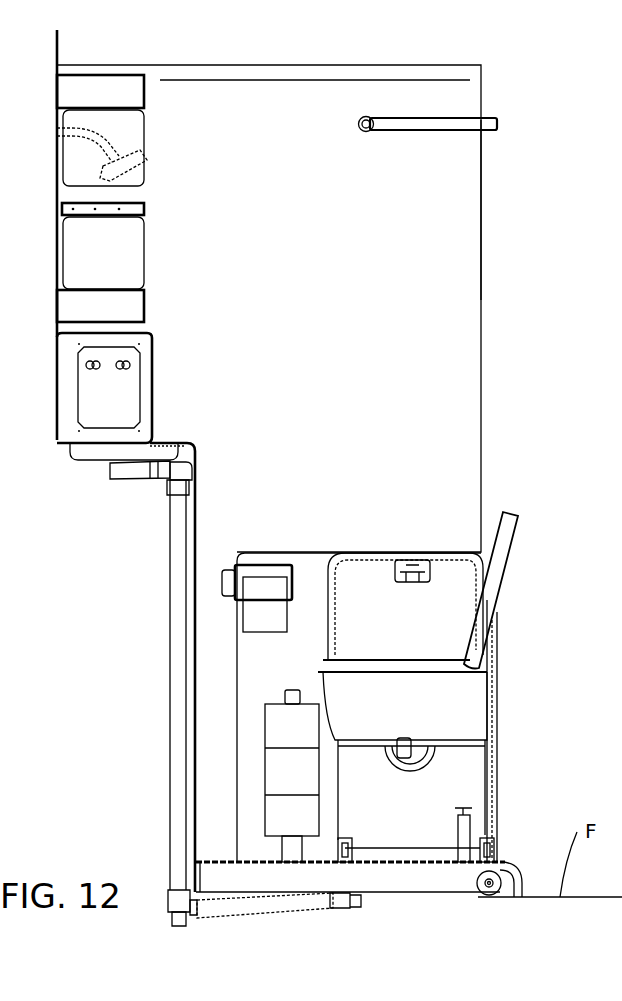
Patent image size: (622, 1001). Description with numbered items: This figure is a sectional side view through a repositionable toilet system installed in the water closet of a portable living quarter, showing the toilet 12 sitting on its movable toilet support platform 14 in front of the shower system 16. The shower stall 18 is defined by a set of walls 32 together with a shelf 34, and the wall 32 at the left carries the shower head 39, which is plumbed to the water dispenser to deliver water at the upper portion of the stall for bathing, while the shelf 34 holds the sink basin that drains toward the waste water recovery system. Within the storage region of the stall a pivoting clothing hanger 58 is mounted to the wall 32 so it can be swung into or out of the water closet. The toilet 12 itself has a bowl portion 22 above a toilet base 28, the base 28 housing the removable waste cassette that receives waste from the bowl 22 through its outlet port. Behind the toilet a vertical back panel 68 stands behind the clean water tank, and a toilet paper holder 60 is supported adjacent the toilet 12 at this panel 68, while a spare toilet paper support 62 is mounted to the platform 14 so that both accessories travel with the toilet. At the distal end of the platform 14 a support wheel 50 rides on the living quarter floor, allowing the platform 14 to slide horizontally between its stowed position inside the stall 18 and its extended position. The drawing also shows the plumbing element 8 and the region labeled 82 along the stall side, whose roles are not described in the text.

The drain pipe 8 is at (180, 690).
The toilet 12 is at (400, 528).
The toilet support platform 14 is at (531, 861).
The shower system 16 is at (556, 100).
The shower stall 18 is at (518, 211).
The bowl portion 22 is at (433, 722).
The toilet base 28 is at (408, 814).
The walls 32 is at (303, 252).
The shelf 34 is at (192, 430).
The shower head 39 is at (134, 158).
The support wheels 50 is at (489, 887).
The clothing hanger 58 is at (420, 131).
The toilet paper holder 60 is at (275, 565).
The spare toilet paper support 62 is at (291, 692).
The back panel 68 is at (338, 555).
The wall panel 82 is at (57, 98).